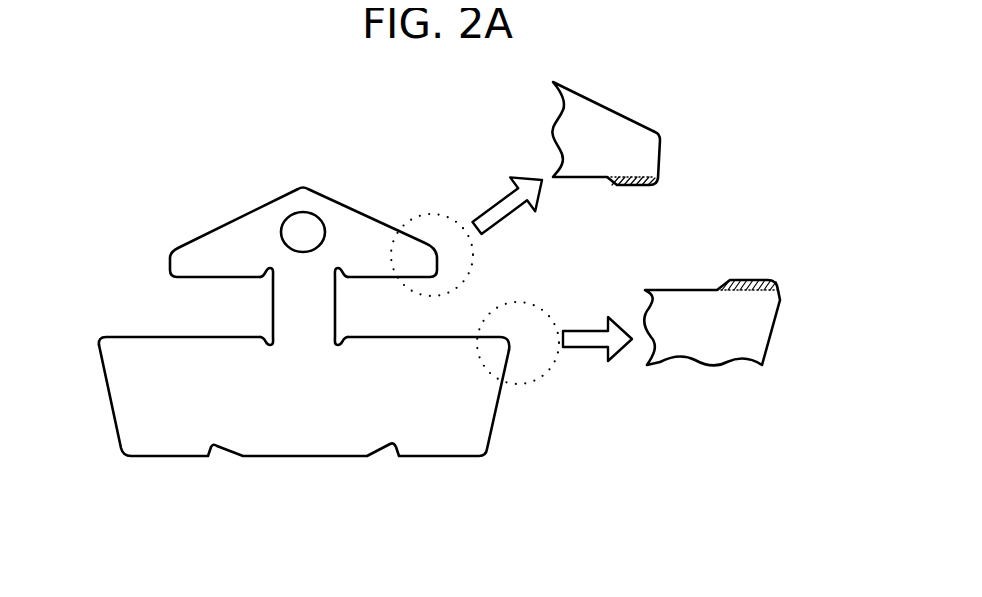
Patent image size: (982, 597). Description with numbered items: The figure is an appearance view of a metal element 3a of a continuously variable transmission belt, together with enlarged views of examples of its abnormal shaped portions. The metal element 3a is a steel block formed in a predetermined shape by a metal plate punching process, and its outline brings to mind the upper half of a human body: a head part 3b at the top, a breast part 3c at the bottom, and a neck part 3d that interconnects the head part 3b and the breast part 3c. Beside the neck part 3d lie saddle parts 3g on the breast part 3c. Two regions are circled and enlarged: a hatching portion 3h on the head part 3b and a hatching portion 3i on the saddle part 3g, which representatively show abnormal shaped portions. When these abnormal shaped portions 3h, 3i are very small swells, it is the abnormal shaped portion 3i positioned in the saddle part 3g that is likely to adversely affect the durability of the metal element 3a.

The metal element 3a is at (380, 176).
The head part 3b is at (257, 227).
The breast part 3c is at (193, 445).
The neck part 3d is at (292, 337).
The saddle part 3g is at (138, 337).
The hatching portion 3h is at (655, 186).
The hatching portion 3i is at (751, 282).